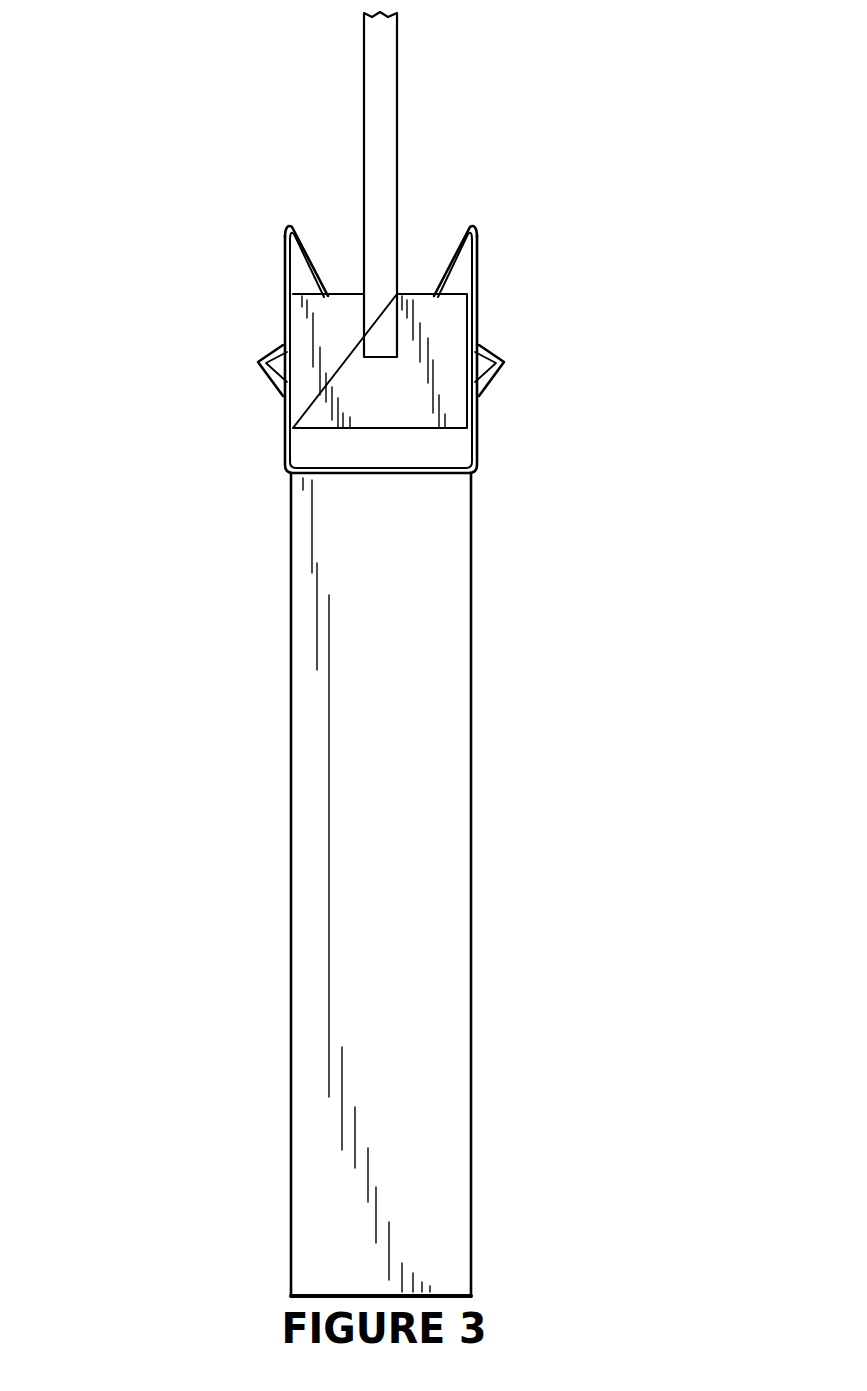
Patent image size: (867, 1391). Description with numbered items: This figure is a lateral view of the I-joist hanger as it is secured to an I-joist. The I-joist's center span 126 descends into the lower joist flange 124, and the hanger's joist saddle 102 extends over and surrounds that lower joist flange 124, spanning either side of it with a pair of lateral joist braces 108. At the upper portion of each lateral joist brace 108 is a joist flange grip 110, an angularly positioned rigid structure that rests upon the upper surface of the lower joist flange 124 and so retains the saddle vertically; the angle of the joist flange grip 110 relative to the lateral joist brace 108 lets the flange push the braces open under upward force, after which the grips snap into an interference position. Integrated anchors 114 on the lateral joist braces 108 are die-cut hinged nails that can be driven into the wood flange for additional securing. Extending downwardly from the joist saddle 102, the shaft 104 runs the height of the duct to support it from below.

The joist saddle 102 is at (532, 474).
The shaft 104 is at (457, 622).
The lateral joist brace 108 is at (285, 297).
The joist flange grip 110 is at (312, 230).
The integrated anchor 114 is at (257, 364).
The lower joist flange 124 is at (415, 294).
The center span 126 is at (382, 70).